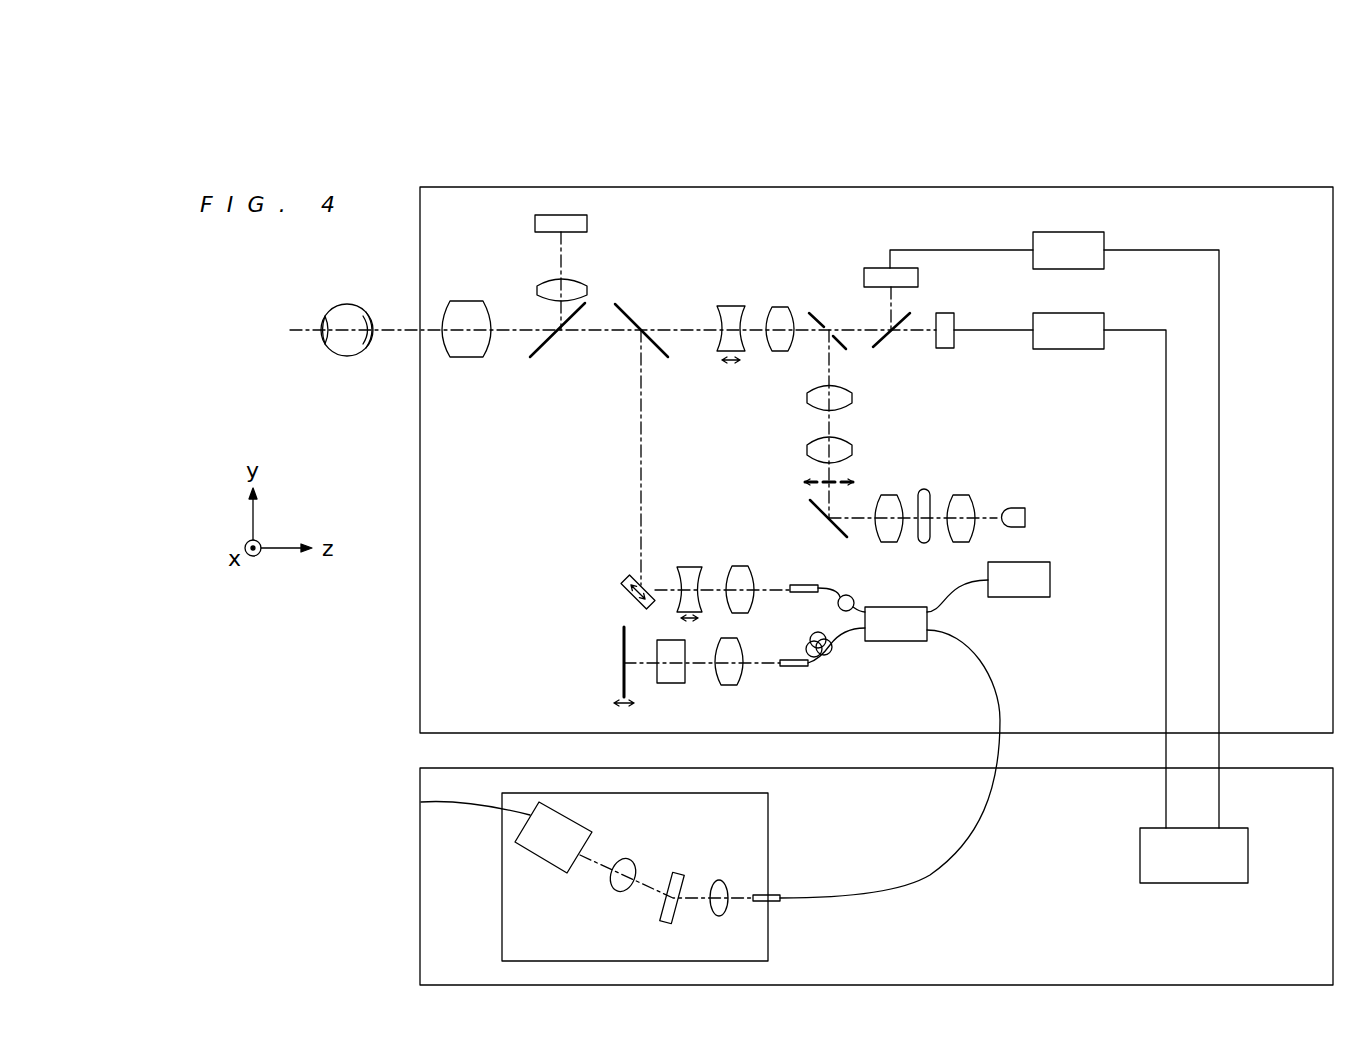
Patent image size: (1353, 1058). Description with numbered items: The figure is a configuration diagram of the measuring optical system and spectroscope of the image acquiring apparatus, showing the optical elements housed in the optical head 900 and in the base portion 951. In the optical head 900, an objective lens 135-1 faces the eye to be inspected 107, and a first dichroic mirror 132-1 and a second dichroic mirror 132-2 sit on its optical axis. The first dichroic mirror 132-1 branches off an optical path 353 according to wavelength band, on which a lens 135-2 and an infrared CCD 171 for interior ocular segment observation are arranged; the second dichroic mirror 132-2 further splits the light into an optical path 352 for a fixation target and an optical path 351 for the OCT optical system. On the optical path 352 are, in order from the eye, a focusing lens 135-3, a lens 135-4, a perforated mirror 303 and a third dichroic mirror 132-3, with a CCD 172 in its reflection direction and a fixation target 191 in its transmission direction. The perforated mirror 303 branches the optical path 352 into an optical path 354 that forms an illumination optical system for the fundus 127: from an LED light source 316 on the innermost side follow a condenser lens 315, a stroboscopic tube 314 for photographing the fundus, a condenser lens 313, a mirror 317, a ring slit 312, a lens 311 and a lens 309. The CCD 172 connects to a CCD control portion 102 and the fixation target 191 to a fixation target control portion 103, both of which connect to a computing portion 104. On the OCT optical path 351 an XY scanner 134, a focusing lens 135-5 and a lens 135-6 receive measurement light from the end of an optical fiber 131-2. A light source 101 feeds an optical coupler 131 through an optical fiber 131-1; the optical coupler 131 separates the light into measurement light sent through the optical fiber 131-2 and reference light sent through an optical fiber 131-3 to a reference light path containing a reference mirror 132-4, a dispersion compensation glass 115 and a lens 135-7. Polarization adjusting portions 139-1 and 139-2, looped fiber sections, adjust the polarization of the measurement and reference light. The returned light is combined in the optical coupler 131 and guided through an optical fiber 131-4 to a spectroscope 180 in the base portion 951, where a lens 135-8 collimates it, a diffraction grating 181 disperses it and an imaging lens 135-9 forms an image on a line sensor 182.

The optical head 900 is at (420, 262).
The eye to be inspected 107 is at (350, 350).
The fundus 127 is at (325, 334).
The objective lens 135-1 is at (467, 357).
The infrared CCD 171 is at (535, 223).
The optical path for anterior ocular segment observation 353 is at (561, 256).
The lens 135-2 is at (537, 290).
The first dichroic mirror 132-1 is at (552, 347).
The second dichroic mirror 132-2 is at (630, 316).
The optical path for OCT optical system 351 is at (641, 376).
The optical path for fixation target 352 is at (675, 330).
The focusing lens 135-3 is at (730, 306).
The lens 135-4 is at (780, 307).
The perforated mirror 303 is at (818, 324).
The optical path 354 is at (831, 378).
The CCD 172 is at (882, 268).
The third dichroic mirror 132-3 is at (908, 314).
The fixation target 191 is at (954, 343).
The CCD control portion 102 is at (1104, 240).
The fixation target control portion 103 is at (1104, 320).
The computing portion 104 is at (1248, 860).
The lens 309 is at (850, 400).
The lens 311 is at (810, 448).
The ring slit 312 is at (806, 482).
The mirror 317 is at (815, 508).
The condenser lens 313 is at (886, 500).
The stroboscopic tube 314 is at (924, 489).
The condenser lens 315 is at (958, 500).
The LED light source 316 is at (1014, 510).
The XY scanner 134 is at (625, 585).
The focusing lens 135-5 is at (688, 567).
The lens 135-6 is at (740, 568).
The optical fiber 131-2 is at (828, 590).
The polarization adjusting portion 139-1 is at (852, 600).
The optical coupler 131 is at (918, 636).
The optical fiber 131-1 is at (935, 606).
The light source 101 is at (1050, 580).
The optical fiber 131-4 is at (985, 650).
The polarization adjusting portion 139-2 is at (810, 636).
The optical fiber 131-3 is at (850, 627).
The reference mirror 132-4 is at (624, 660).
The dispersion compensation glass 115 is at (670, 683).
The lens 135-7 is at (740, 680).
The base portion 951 is at (421, 850).
The spectroscope 180 is at (502, 866).
The line sensor 182 is at (568, 826).
The diffraction grating 181 is at (680, 878).
The imaging lens 135-9 is at (615, 892).
The lens 135-8 is at (718, 916).